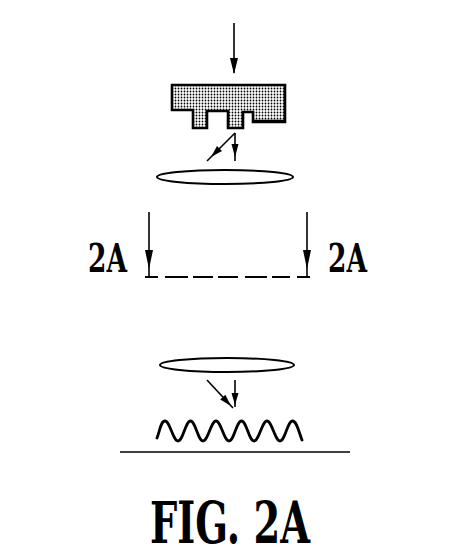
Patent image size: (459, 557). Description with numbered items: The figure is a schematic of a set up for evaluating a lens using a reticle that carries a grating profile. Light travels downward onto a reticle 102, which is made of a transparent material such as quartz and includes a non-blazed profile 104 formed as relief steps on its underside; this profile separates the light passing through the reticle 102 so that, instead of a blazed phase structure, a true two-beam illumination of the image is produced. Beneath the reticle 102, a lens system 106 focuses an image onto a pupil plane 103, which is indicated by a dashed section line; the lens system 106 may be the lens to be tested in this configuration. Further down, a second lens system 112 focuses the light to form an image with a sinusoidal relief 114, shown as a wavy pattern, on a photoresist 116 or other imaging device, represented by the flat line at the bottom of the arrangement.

The reticle 102 is at (285, 93).
The pupil plane 103 is at (260, 277).
The non-blazed profile 104 is at (258, 122).
The lens system 106 is at (292, 176).
The lens system 112 is at (163, 363).
The sinusoidal relief 114 is at (300, 428).
The photoresist 116 is at (317, 452).